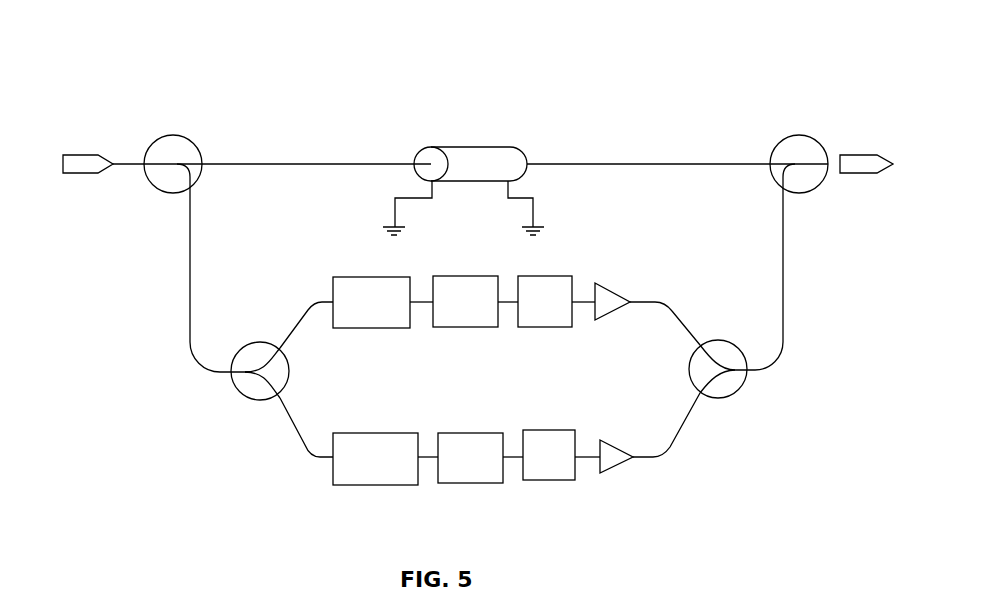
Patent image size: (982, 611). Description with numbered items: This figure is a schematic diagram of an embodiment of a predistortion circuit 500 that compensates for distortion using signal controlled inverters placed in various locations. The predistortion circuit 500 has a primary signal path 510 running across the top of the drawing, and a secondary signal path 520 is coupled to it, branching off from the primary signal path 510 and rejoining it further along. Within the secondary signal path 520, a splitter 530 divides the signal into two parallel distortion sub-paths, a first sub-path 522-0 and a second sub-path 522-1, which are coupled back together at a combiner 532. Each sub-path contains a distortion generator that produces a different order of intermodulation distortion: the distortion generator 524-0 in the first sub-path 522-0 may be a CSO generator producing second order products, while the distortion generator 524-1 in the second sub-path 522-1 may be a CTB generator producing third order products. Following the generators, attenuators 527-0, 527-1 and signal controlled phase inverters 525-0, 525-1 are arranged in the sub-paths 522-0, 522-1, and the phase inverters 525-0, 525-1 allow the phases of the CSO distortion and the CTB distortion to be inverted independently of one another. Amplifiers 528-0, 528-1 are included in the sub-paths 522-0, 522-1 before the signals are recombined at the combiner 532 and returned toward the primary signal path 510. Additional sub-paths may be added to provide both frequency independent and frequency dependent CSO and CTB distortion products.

The predistortion circuit 500 is at (185, 53).
The primary signal path 510 is at (502, 106).
The secondary signal path 520 is at (122, 353).
The first sub-path 522-0 is at (269, 309).
The second sub-path 522-1 is at (260, 444).
The distortion generator 524-0 is at (365, 328).
The distortion generator 524-1 is at (347, 485).
The attenuator 527-0 is at (480, 327).
The attenuator 527-1 is at (470, 483).
The signal controlled phase inverter 525-0 is at (552, 327).
The signal controlled phase inverter 525-1 is at (550, 480).
The amplifier 528-0 is at (616, 310).
The amplifier 528-1 is at (612, 466).
The splitter 530 is at (232, 388).
The combiner 532 is at (740, 388).